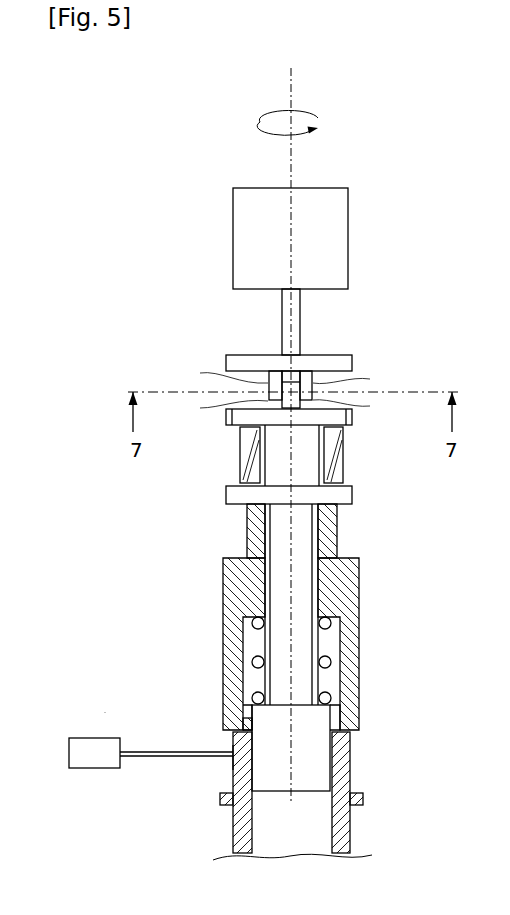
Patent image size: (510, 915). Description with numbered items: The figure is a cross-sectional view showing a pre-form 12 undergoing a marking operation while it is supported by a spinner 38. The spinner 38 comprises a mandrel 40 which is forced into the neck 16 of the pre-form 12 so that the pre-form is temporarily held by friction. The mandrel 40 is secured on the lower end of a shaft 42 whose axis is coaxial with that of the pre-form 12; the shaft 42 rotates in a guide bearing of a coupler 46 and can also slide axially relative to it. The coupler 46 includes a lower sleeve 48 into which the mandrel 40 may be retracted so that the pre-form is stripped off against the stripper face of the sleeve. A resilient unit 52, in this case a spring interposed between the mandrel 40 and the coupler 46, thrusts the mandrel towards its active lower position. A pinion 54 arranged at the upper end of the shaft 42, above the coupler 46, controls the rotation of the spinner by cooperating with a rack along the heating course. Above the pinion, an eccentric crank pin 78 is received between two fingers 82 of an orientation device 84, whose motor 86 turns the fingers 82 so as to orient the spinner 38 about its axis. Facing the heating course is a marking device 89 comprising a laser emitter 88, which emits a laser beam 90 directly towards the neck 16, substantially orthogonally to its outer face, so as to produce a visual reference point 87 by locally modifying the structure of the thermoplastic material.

The pre-form 12 is at (354, 818).
The neck 16 is at (350, 776).
The spinner 38 is at (208, 652).
The mandrel 40 is at (316, 750).
The shaft 42 is at (300, 590).
The coupler 46 is at (206, 621).
The sleeve 48 is at (238, 726).
The resilient unit 52 is at (325, 661).
The pinion 54 is at (336, 418).
The crank pin 78 is at (282, 398).
The fingers 82 is at (268, 387).
The orientation device 84 is at (365, 255).
The motor 86 is at (250, 238).
The reference point 87 is at (233, 762).
The laser emitter 88 is at (90, 752).
The marking device 89 is at (106, 708).
The laser beam 90 is at (168, 757).